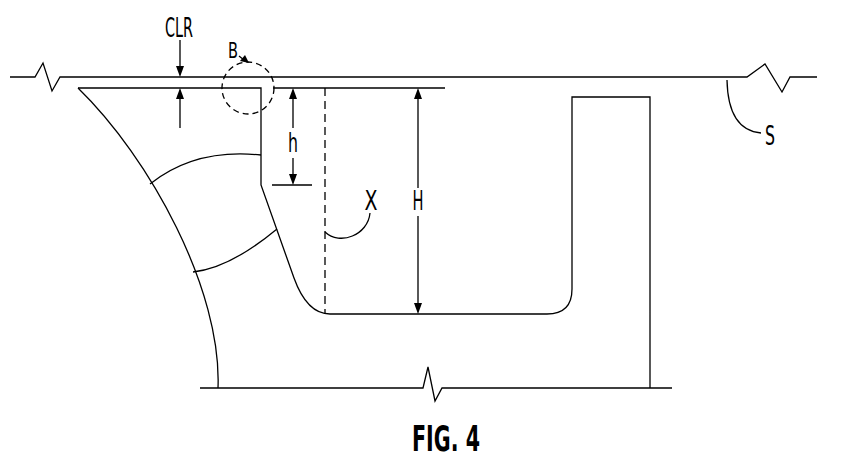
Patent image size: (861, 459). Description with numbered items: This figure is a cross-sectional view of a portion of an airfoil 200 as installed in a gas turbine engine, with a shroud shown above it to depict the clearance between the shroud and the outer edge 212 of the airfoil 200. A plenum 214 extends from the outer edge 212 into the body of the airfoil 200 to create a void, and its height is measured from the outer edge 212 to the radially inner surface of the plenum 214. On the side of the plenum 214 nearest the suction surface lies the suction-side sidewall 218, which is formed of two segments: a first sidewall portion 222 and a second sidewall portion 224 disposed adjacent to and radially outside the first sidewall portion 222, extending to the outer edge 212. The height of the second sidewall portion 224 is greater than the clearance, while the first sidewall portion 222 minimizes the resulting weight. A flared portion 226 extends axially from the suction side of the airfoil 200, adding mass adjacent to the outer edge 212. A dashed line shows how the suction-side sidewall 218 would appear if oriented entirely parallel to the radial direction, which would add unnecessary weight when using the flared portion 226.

The airfoil 200 is at (623, 247).
The outer edge 212 is at (603, 90).
The plenum 214 is at (513, 140).
The suction-side sidewall 218 is at (287, 267).
The first sidewall portion 222 is at (193, 272).
The second sidewall portion 224 is at (150, 184).
The flared portion 226 is at (150, 148).